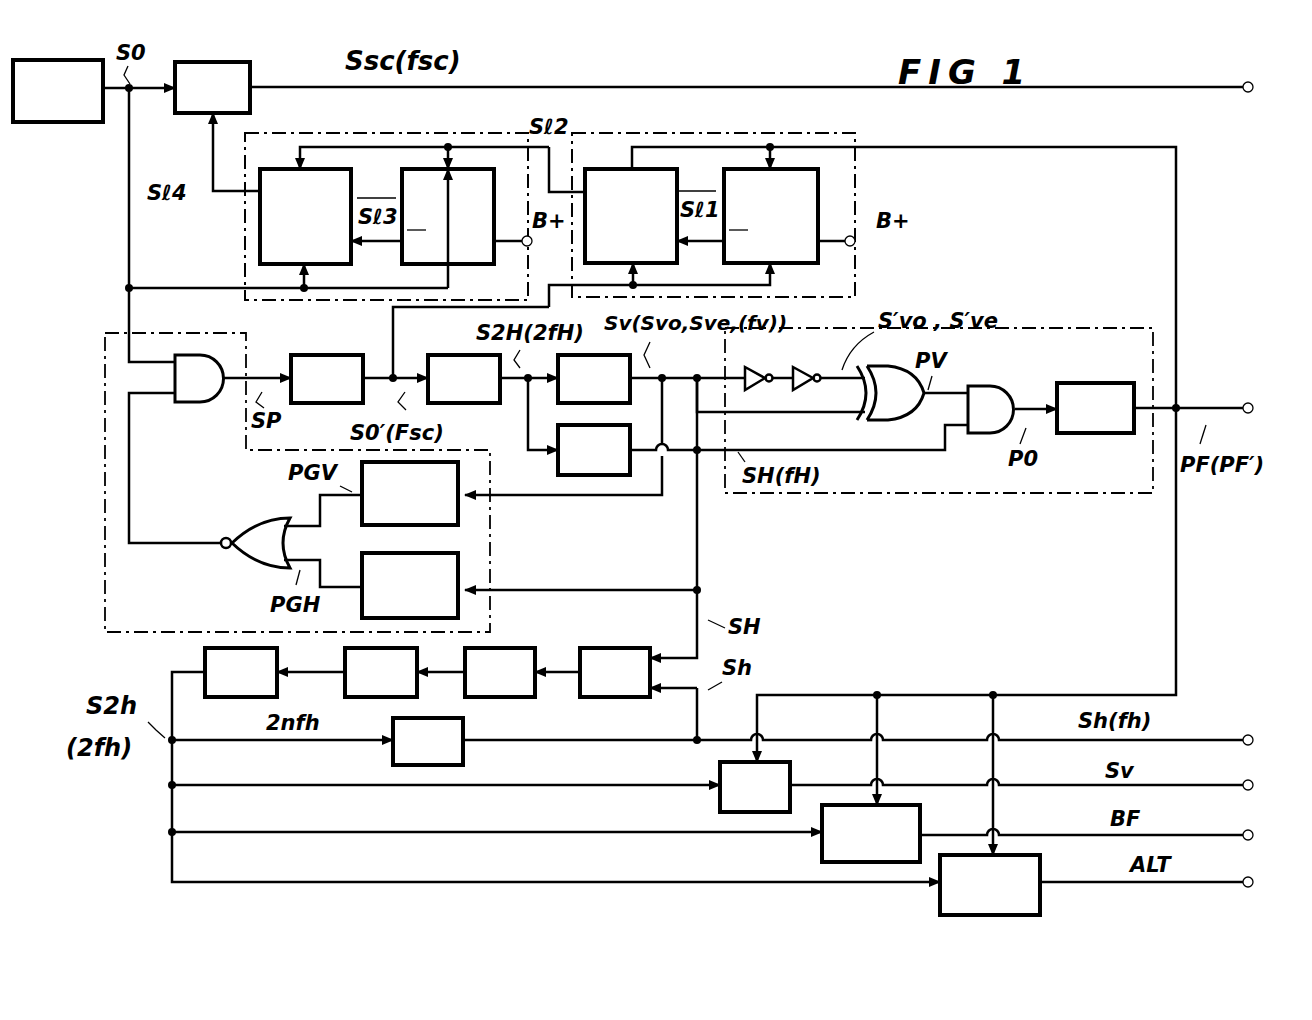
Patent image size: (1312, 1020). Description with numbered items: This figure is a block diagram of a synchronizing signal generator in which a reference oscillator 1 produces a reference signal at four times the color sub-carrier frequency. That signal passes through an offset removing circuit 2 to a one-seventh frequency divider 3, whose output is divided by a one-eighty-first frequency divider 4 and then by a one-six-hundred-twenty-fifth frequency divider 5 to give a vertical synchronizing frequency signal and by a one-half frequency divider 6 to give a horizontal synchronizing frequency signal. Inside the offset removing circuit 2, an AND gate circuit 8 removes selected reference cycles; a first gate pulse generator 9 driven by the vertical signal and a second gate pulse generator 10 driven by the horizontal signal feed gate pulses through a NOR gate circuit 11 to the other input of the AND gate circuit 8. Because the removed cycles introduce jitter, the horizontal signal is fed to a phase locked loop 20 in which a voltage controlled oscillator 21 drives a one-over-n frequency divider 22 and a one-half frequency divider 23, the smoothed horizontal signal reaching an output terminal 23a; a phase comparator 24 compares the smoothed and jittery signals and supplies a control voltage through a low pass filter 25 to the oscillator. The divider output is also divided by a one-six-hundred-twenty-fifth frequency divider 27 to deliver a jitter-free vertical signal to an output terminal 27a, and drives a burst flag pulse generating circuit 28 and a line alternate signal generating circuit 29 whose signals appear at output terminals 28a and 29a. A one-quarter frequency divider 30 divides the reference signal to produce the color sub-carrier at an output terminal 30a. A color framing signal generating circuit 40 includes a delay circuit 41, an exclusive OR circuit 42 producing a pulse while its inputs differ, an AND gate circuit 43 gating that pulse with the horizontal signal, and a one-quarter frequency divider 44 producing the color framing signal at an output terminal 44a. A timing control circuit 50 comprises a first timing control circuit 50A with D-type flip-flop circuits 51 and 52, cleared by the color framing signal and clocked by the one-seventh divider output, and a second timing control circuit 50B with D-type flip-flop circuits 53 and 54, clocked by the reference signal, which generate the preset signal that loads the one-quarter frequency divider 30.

The reference oscillator 1 is at (70, 123).
The offset removing circuit 2 is at (105, 498).
The 1/7 frequency divider 3 is at (320, 355).
The 1/81 frequency divider 4 is at (488, 412).
The 1/625 frequency divider 5 is at (632, 398).
The 1/2 frequency divider 6 is at (552, 462).
The AND gate circuit 8 is at (196, 403).
The first gate pulse generator 9 is at (458, 522).
The second gate pulse generator 10 is at (362, 584).
The NOR gate circuit 11 is at (254, 568).
The phase locked loop 20 is at (570, 724).
The voltage controlled oscillator 21 is at (380, 697).
The 1/n frequency divider 22 is at (244, 697).
The 1/2 frequency divider 23 is at (470, 758).
The output terminal 23a is at (1252, 736).
The phase comparator 24 is at (618, 648).
The low pass filter 25 is at (520, 648).
The 1/625 frequency divider 27 is at (790, 776).
The output terminal 27a is at (1252, 782).
The burst flag pulse generating circuit 28 is at (920, 822).
The output terminal 28a is at (1252, 832).
The line alternate signal generating circuit 29 is at (1040, 876).
The output terminal 29a is at (1252, 880).
The 1/4 frequency divider 30 is at (252, 72).
The output terminal 30a is at (1244, 104).
The color framing signal generating circuit 40 is at (1052, 328).
The delay circuit 41 is at (770, 366).
The exclusive OR circuit 42 is at (894, 424).
The AND gate circuit 43 is at (996, 440).
The 1/4 frequency divider 44 is at (1094, 383).
The output terminal 44a is at (1244, 402).
The timing control circuit 50 is at (514, 114).
The first timing control circuit 50A is at (789, 128).
The second timing control circuit 50B is at (444, 128).
The D-type flip-flop circuit 51 is at (814, 266).
The D-type flip-flop circuit 52 is at (676, 266).
The D-type flip-flop circuit 53 is at (486, 268).
The D-type flip-flop circuit 54 is at (352, 266).